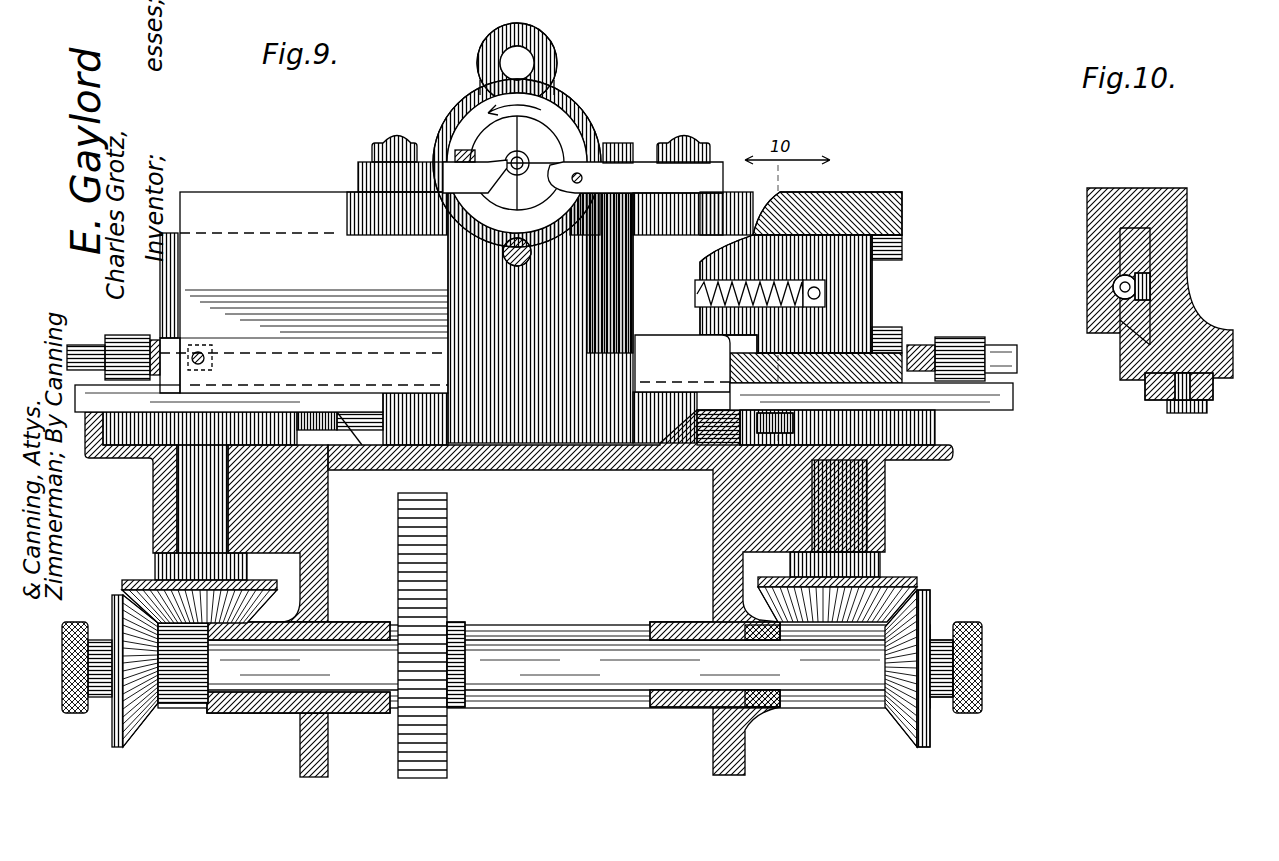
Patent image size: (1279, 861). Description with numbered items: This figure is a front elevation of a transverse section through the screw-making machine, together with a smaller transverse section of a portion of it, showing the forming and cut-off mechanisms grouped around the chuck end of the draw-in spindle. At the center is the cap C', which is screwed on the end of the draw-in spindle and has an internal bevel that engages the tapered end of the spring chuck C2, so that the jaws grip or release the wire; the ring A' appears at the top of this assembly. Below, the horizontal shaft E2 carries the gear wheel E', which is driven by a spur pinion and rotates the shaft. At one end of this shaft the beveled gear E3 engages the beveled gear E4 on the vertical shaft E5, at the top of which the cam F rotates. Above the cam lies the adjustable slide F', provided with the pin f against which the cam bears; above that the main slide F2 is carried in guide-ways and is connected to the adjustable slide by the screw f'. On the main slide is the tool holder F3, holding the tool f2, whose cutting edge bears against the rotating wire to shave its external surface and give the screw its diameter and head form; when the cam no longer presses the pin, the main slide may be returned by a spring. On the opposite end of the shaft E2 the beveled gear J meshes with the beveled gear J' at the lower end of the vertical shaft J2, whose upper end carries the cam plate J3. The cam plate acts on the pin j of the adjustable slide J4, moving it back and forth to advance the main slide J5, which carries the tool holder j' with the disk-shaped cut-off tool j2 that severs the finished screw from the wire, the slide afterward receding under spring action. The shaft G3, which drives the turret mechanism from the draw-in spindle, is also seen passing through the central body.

In FIG. 9, the ring or eye of the disk A' is at (487, 63).
In FIG. 9, the cap C' is at (517, 144).
In FIG. 9, the spring chuck C2 is at (533, 158).
In FIG. 9, the tool f2 is at (462, 160).
In FIG. 9, the tool holder j' is at (635, 171).
In FIG. 9, the cut-off tool j2 is at (590, 237).
In FIG. 9, the shaft G3 is at (516, 265).
In FIG. 9, the tool holder F3 is at (357, 172).
In FIG. 9, the main slide F2 is at (304, 292).
In FIG. 9, the screw f' is at (192, 329).
In FIG. 9, the adjustable slide F' is at (113, 357).
In FIG. 9, the pin f is at (340, 405).
In FIG. 9, the cam F is at (519, 593).
In FIG. 9, the vertical shaft E5 is at (201, 512).
In FIG. 9, the beveled gear E4 is at (140, 580).
In FIG. 9, the beveled gear E3 is at (112, 720).
In FIG. 9, the gear wheel E' is at (439, 635).
In FIG. 9, the shaft E2 is at (508, 657).
In FIG. 9, the beveled gear J is at (908, 671).
In FIG. 9, the beveled gear J' is at (844, 581).
In FIG. 9, the vertical shaft J2 is at (840, 505).
In FIG. 9, the cam plate J3 is at (787, 284).
In FIG. 10, the cam plate J3 is at (1112, 283).
In FIG. 9, the adjustable slide J4 is at (1003, 397).
In FIG. 10, the adjustable slide J4 is at (1143, 395).
In FIG. 9, the main slide J5 is at (768, 292).
In FIG. 10, the main slide J5 is at (1160, 284).
In FIG. 9, the pin j is at (837, 446).
In FIG. 10, the pin j is at (1187, 414).